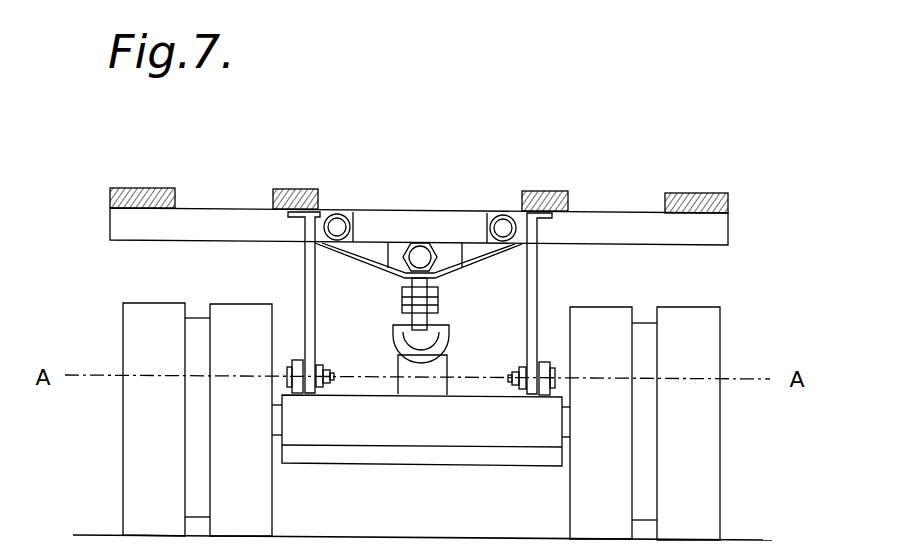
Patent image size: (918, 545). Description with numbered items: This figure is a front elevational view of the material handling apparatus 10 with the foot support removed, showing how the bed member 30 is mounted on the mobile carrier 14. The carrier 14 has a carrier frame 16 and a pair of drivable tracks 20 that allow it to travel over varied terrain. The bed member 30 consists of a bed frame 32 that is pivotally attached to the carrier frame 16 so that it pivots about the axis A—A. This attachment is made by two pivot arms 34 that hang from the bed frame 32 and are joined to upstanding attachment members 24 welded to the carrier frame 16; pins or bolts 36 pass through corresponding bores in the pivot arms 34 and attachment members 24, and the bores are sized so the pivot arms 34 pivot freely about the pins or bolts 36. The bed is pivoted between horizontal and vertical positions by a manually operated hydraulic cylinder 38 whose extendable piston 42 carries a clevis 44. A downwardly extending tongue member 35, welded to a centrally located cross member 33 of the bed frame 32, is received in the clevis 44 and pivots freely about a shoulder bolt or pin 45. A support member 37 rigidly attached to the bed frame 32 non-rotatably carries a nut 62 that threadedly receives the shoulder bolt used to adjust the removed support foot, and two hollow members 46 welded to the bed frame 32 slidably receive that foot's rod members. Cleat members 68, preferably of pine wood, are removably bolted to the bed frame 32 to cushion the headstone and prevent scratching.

The material handling apparatus 10 is at (152, 132).
The mobile carrier 14 is at (732, 462).
The carrier frame 16 is at (360, 453).
The drivable tracks 20 is at (137, 455).
The upstanding attachment members 24 is at (298, 360).
The bed member 30 is at (130, 252).
The bed frame 32 is at (705, 237).
The cross member 33 is at (352, 259).
The pivot arms 34 is at (303, 264).
The tongue member 35 is at (428, 291).
The pins or bolts 36 is at (337, 382).
The support member 37 is at (397, 244).
The hydraulic cylinder 38 is at (418, 388).
The extendable piston 42 is at (440, 346).
The clevis 44 is at (400, 331).
The shoulder bolt or pin 45 is at (440, 303).
The hollow members 46 is at (353, 213).
The nut 62 is at (432, 249).
The cleat members 68 is at (158, 188).